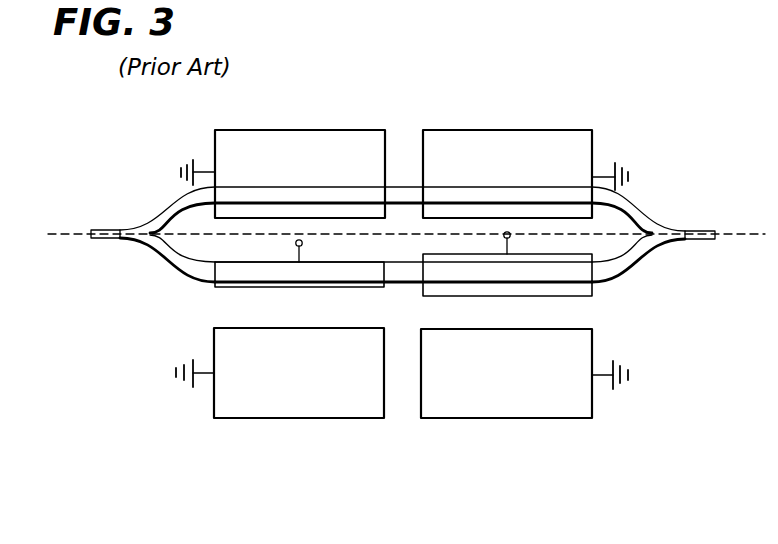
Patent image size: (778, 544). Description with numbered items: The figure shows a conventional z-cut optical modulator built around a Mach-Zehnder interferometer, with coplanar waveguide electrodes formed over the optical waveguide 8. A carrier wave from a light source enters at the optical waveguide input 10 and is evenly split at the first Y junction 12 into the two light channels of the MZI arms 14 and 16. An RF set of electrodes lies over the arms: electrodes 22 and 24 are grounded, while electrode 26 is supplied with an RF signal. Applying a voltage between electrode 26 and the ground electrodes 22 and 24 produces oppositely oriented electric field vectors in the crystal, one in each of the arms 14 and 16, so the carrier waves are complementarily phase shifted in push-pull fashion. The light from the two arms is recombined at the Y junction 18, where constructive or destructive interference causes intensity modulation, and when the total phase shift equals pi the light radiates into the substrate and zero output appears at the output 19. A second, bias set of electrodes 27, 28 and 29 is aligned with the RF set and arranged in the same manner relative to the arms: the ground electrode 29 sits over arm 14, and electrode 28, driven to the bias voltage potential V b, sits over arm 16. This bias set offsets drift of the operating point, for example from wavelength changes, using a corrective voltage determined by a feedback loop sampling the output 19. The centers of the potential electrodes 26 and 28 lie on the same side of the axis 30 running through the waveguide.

The optical waveguide 8 is at (170, 188).
The optical waveguide input 10 is at (110, 228).
The first Y junction 12 is at (158, 218).
The MZI arm 14 is at (392, 185).
The MZI arm 16 is at (397, 285).
The Y junction 18 is at (645, 217).
The output 19 is at (690, 242).
The ground electrode 22 is at (232, 420).
The ground electrode 24 is at (268, 130).
The RF electrode 26 is at (213, 288).
The bias electrode 27 is at (433, 420).
The bias electrode 28 is at (487, 297).
The ground electrode 29 is at (475, 130).
The axis 30 is at (65, 235).
The bias voltage potential b is at (328, 272).